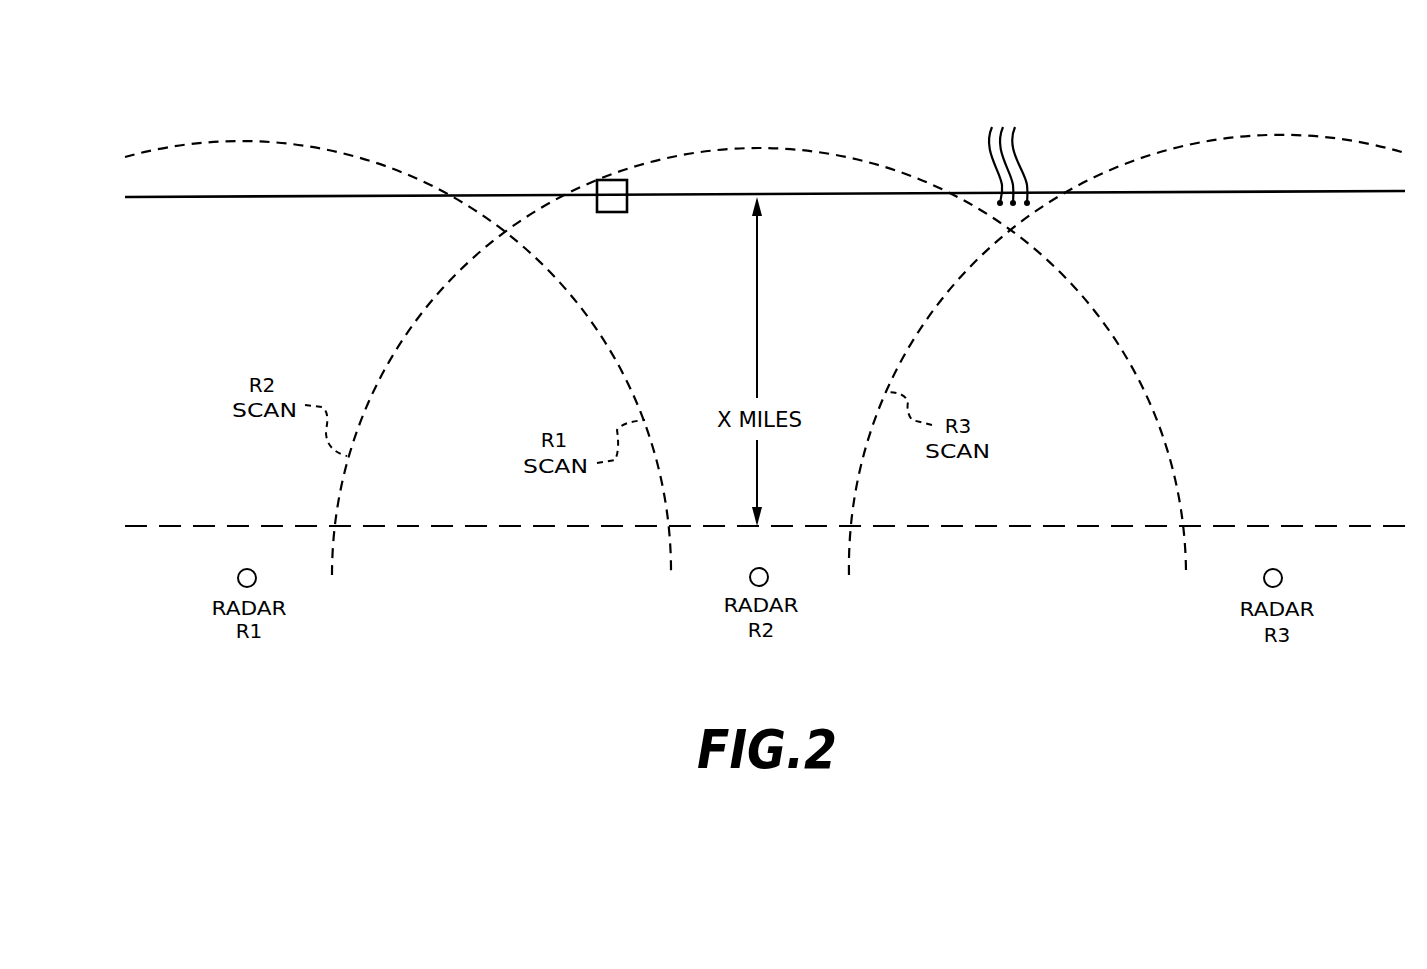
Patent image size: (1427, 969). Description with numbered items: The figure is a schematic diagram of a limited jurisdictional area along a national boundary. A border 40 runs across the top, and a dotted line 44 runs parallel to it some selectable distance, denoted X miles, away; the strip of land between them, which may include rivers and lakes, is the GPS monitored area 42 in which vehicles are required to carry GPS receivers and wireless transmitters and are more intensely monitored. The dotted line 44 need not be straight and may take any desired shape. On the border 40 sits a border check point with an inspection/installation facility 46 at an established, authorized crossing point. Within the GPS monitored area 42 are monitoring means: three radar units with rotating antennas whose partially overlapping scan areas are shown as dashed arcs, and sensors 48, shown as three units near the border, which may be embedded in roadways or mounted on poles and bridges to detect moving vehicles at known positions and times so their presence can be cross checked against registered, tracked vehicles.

The border 40 is at (282, 180).
The GPS monitored area 42 is at (1363, 414).
The dotted line 44 is at (1058, 524).
The inspection/installation facility 46 is at (612, 187).
The sensors 48 is at (1025, 149).